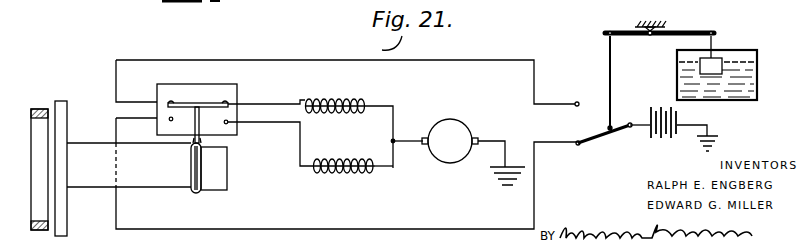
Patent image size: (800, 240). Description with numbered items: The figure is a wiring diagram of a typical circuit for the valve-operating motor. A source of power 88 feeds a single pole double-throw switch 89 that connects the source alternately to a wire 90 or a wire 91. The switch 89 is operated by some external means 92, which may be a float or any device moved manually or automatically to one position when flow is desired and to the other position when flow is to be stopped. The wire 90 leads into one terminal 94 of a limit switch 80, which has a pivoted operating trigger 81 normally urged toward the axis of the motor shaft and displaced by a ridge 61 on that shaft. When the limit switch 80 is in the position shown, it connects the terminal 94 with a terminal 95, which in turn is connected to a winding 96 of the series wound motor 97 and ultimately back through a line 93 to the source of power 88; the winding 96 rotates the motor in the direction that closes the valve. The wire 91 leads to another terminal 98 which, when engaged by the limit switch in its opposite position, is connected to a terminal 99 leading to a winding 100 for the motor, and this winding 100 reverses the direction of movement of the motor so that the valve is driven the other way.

The ridge 61 is at (197, 193).
The limit switch 80 is at (212, 102).
The pivoted operating trigger 81 is at (195, 126).
The source of power 88 is at (662, 138).
The single pole double-throw switch 89 is at (592, 136).
The wire 90 is at (553, 101).
The wire 91 is at (550, 143).
The external means 92 is at (731, 39).
The line 93 is at (506, 141).
The terminal 94 is at (170, 103).
The terminal 95 is at (232, 100).
The winding 96 is at (336, 99).
The series wound motor 97 is at (455, 127).
The terminal 98 is at (169, 120).
The terminal 99 is at (227, 124).
The winding 100 is at (345, 178).